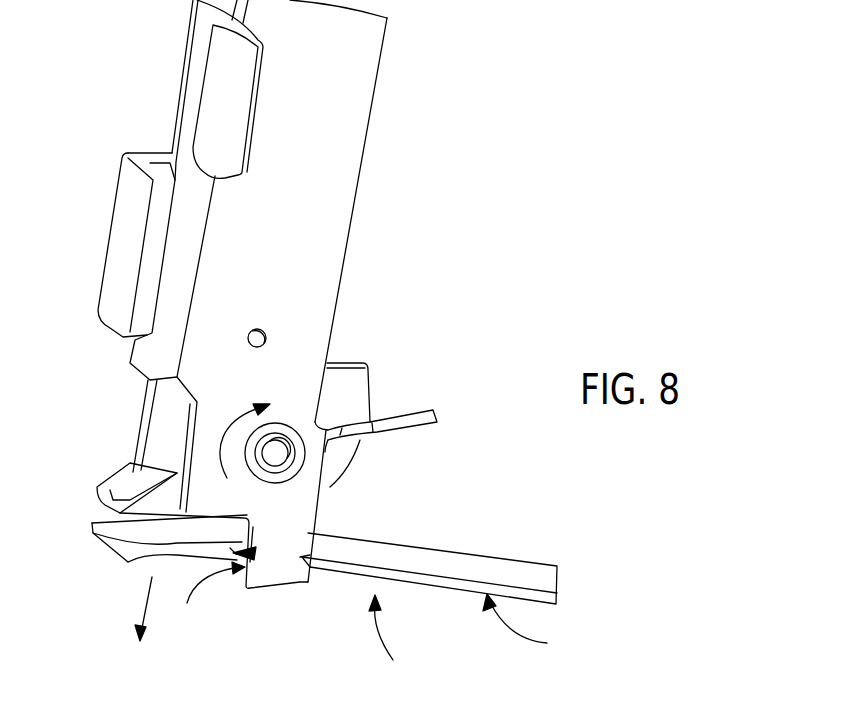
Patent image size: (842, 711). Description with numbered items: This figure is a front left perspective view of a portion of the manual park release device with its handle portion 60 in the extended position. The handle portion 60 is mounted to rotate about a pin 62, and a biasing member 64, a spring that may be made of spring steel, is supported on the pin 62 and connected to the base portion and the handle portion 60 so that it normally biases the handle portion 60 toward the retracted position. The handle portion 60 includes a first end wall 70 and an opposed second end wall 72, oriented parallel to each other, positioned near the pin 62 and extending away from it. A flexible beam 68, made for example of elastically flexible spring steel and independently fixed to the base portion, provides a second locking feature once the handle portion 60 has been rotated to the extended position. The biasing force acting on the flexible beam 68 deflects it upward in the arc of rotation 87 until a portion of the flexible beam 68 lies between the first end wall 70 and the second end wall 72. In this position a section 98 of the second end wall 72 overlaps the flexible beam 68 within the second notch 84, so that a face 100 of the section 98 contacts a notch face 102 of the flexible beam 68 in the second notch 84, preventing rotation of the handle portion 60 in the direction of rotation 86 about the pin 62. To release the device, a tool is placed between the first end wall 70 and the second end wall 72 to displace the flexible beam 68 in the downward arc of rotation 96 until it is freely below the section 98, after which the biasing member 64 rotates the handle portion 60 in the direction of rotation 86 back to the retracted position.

The handle portion 60 is at (328, 60).
The pin 62 is at (290, 452).
The biasing member 64 is at (102, 497).
The flexible beam 68 is at (510, 577).
The first end wall 70 is at (150, 410).
The second end wall 72 is at (193, 448).
The second notch 84 is at (529, 624).
The direction of rotation 86 is at (225, 443).
The arc of rotation 87 is at (383, 643).
The downward arc of rotation 96 is at (142, 602).
The section 98 is at (302, 558).
The face 100 is at (204, 601).
The notch face 102 is at (258, 558).